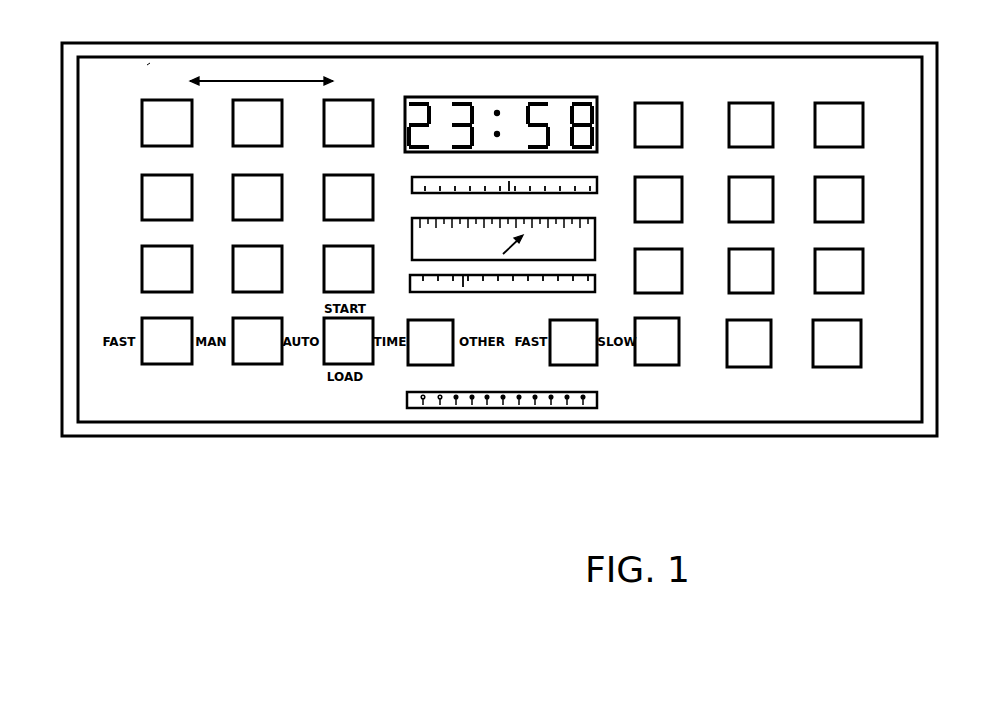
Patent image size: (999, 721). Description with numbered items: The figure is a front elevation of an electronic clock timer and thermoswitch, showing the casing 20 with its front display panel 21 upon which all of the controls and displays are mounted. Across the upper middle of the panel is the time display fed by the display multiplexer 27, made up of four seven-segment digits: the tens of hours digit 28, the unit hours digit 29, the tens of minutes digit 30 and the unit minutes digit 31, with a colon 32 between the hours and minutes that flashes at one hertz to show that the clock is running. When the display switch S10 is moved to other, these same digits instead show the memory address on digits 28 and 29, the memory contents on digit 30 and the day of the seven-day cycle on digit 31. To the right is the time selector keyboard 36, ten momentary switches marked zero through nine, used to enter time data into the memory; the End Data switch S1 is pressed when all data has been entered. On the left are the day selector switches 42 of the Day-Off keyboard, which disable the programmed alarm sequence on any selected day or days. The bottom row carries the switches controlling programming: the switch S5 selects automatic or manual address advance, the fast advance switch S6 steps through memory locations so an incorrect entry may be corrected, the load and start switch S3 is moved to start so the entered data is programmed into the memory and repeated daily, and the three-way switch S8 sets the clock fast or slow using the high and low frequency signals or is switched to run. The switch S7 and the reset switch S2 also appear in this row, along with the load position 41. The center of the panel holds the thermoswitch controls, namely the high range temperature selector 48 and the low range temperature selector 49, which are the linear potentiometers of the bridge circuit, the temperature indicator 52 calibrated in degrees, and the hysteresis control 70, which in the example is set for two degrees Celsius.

The casing 20 is at (927, 174).
The front display panel 21 is at (907, 335).
The display multiplexer 27 is at (516, 107).
The tens of hours digit 28 is at (419, 100).
The unit hours digit 29 is at (463, 100).
The tens of minutes digit 30 is at (537, 104).
The unit minutes digit 31 is at (582, 104).
The colon 32 is at (497, 110).
The time selector keyboard 36 is at (781, 108).
The load switch position 41 is at (885, 78).
The day selector switches 42 is at (152, 62).
The high range temperature selector 48 is at (576, 185).
The low range temperature selector 49 is at (543, 291).
The temperature indicator 52 is at (588, 244).
The hysteresis control 70 is at (599, 402).
The End Data switch S1 is at (750, 367).
The reset switch S2 is at (670, 366).
The load and start switch S3 is at (373, 360).
The address advance mode switch S5 is at (276, 365).
The fast advance switch S6 is at (186, 365).
The day advance switch S7 is at (340, 247).
The three-way switch S8 is at (585, 366).
The display switch S10 is at (445, 366).